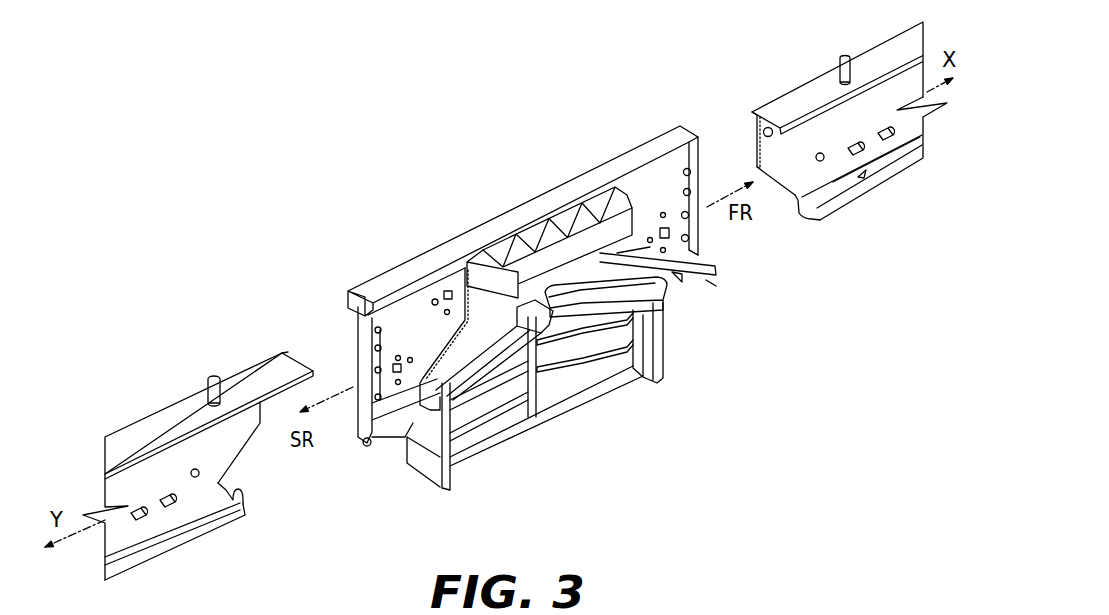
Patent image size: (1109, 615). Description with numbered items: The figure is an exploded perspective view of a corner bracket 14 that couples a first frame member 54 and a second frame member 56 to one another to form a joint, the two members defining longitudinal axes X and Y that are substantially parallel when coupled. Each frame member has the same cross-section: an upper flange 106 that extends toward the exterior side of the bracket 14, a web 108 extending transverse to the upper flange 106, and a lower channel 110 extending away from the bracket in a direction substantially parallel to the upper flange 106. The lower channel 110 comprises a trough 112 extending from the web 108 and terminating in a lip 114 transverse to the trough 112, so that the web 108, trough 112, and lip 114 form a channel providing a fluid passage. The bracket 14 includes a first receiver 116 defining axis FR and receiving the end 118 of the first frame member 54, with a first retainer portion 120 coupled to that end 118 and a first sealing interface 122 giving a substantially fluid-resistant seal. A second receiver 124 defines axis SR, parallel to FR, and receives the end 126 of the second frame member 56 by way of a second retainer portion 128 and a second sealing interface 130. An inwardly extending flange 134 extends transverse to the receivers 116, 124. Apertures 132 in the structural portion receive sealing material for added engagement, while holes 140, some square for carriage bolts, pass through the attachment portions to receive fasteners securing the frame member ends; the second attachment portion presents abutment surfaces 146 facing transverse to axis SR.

The bracket 14 is at (675, 125).
The first frame member 54 is at (907, 33).
The second frame member 56 is at (108, 437).
The upper flange 106 is at (288, 352).
The web 108 is at (245, 423).
The lower channel 110 is at (240, 500).
The trough 112 is at (200, 530).
The lip 114 is at (870, 167).
The first receiver 116 is at (703, 232).
The end of the first frame member 118 is at (782, 205).
The first retainer portion 120 is at (668, 172).
The first sealing interface 122 is at (716, 270).
The second receiver 124 is at (343, 413).
The end of the second frame member 126 is at (297, 348).
The second retainer portion 128 is at (387, 320).
The second sealing interface 130 is at (430, 337).
The apertures 132 is at (437, 300).
The inwardly extending flange 134 is at (525, 202).
The holes 140 is at (450, 293).
The second abutment surfaces 146 is at (367, 445).